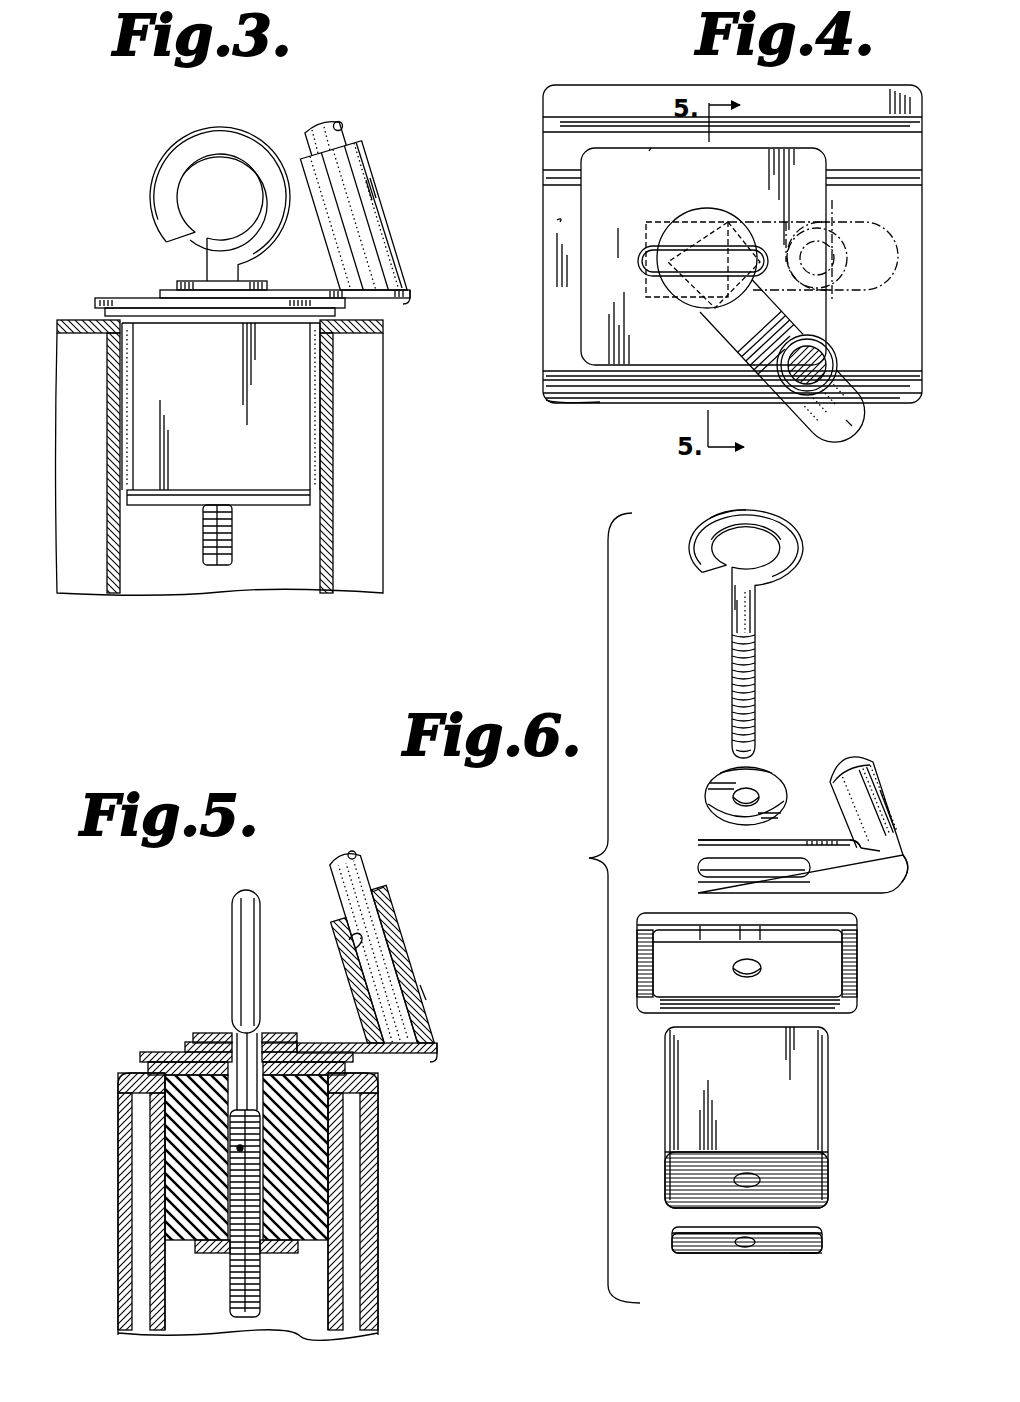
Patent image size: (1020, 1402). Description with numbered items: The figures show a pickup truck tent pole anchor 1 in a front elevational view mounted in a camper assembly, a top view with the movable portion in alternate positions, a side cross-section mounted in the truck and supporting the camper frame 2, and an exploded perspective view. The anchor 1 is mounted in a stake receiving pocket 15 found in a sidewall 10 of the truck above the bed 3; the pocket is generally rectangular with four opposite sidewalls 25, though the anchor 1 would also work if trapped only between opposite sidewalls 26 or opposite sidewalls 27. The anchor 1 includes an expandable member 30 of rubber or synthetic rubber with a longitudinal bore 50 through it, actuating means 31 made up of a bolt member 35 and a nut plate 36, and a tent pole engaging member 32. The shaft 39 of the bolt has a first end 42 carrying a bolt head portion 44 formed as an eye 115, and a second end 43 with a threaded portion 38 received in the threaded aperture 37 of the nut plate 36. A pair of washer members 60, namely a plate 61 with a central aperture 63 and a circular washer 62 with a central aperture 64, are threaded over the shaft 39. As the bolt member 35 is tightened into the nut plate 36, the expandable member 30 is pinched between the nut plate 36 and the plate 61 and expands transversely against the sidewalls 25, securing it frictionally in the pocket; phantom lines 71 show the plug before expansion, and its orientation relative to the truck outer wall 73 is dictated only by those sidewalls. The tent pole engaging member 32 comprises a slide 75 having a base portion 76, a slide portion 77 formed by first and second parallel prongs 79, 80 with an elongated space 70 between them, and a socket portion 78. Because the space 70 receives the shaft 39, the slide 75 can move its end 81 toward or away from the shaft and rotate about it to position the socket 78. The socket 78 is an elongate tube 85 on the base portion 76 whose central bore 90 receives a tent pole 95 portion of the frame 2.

In FIG. 3, the anchor 1 is at (138, 251).
In FIG. 4, the anchor 1 is at (636, 206).
In FIG. 5, the anchor 1 is at (170, 974).
In FIG. 6, the anchor 1 is at (848, 702).
In FIG. 3, the camper frame 2 is at (343, 128).
In FIG. 5, the camper frame 2 is at (357, 871).
In FIG. 4, the bed 3 is at (593, 91).
In FIG. 4, the sidewalls 10 is at (901, 141).
In FIG. 3, the stake receiving pocket 15 is at (320, 521).
In FIG. 3, the sidewalls 25 is at (120, 545).
In FIG. 4, the sidewalls 25 is at (649, 150).
In FIG. 4, the opposite sidewalls 26 is at (738, 150).
In FIG. 5, the opposite sidewalls 26 is at (165, 1308).
In FIG. 4, the opposite sidewalls 27 is at (826, 179).
In FIG. 5, the expandable member 30 is at (175, 1120).
In FIG. 6, the expandable member 30 is at (828, 1110).
In FIG. 6, the actuating means 31 is at (757, 617).
In FIG. 3, the tent pole engaging member 32 is at (372, 200).
In FIG. 4, the tent pole engaging member 32 is at (836, 430).
In FIG. 5, the tent pole engaging member 32 is at (386, 908).
In FIG. 6, the tent pole engaging member 32 is at (884, 800).
In FIG. 6, the bolt member 35 is at (757, 634).
In FIG. 5, the nut plate 36 is at (283, 1254).
In FIG. 6, the nut plate 36 is at (798, 1256).
In FIG. 6, the threaded aperture 37 is at (746, 1254).
In FIG. 3, the threaded portion 38 is at (232, 555).
In FIG. 5, the threaded portion 38 is at (230, 1277).
In FIG. 6, the threaded portion 38 is at (758, 696).
In FIG. 5, the shaft 39 is at (237, 1090).
In FIG. 6, the shaft 39 is at (733, 636).
In FIG. 6, the first end 42 is at (731, 600).
In FIG. 6, the second end 43 is at (758, 753).
In FIG. 6, the bolt head portion 44 is at (803, 550).
In FIG. 5, the longitudinal bore 50 is at (236, 1148).
In FIG. 6, the longitudinal bore 50 is at (742, 1174).
In FIG. 6, the washer members 60 is at (710, 776).
In FIG. 3, the plate 61 is at (130, 298).
In FIG. 4, the plate 61 is at (823, 160).
In FIG. 5, the plate 61 is at (143, 1052).
In FIG. 6, the plate 61 is at (852, 915).
In FIG. 3, the circular washer 62 is at (265, 282).
In FIG. 4, the circular washer 62 is at (692, 211).
In FIG. 5, the circular washer 62 is at (200, 1033).
In FIG. 6, the circular washer 62 is at (785, 784).
In FIG. 6, the central aperture 63 is at (754, 976).
In FIG. 6, the central aperture 64 is at (738, 800).
In FIG. 6, the space 70 is at (702, 866).
In FIG. 5, the phantom lines 71 is at (172, 1200).
In FIG. 4, the outer wall 73 is at (593, 400).
In FIG. 5, the outer wall 73 is at (378, 1110).
In FIG. 3, the slide 75 is at (291, 308).
In FIG. 4, the slide 75 is at (768, 356).
In FIG. 5, the slide 75 is at (322, 1043).
In FIG. 6, the slide 75 is at (830, 852).
In FIG. 3, the base portion 76 is at (400, 300).
In FIG. 5, the base portion 76 is at (424, 1059).
In FIG. 6, the base portion 76 is at (903, 878).
In FIG. 4, the slide portion 77 is at (808, 306).
In FIG. 6, the slide portion 77 is at (850, 891).
In FIG. 3, the socket portion 78 is at (364, 170).
In FIG. 4, the socket portion 78 is at (882, 242).
In FIG. 5, the socket portion 78 is at (406, 965).
In FIG. 6, the socket portion 78 is at (863, 765).
In FIG. 4, the first prong 79 is at (727, 228).
In FIG. 6, the first prong 79 is at (698, 893).
In FIG. 4, the second prong 80 is at (672, 296).
In FIG. 6, the second prong 80 is at (698, 840).
In FIG. 6, the end 81 is at (698, 882).
In FIG. 3, the elongate tube 85 is at (390, 253).
In FIG. 5, the elongate tube 85 is at (424, 993).
In FIG. 5, the central bore 90 is at (342, 941).
In FIG. 3, the tent pole 95 is at (312, 140).
In FIG. 4, the tent pole 95 is at (833, 358).
In FIG. 5, the tent pole 95 is at (324, 884).
In FIG. 3, the eye 115 is at (215, 112).
In FIG. 4, the eye 115 is at (702, 255).
In FIG. 5, the eye 115 is at (245, 890).
In FIG. 6, the eye 115 is at (722, 512).